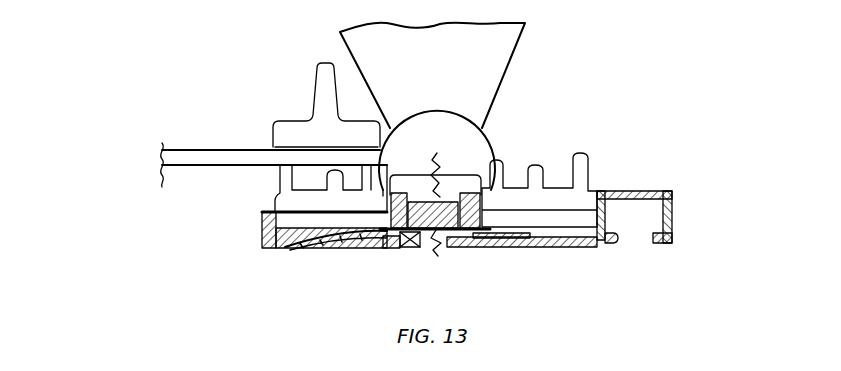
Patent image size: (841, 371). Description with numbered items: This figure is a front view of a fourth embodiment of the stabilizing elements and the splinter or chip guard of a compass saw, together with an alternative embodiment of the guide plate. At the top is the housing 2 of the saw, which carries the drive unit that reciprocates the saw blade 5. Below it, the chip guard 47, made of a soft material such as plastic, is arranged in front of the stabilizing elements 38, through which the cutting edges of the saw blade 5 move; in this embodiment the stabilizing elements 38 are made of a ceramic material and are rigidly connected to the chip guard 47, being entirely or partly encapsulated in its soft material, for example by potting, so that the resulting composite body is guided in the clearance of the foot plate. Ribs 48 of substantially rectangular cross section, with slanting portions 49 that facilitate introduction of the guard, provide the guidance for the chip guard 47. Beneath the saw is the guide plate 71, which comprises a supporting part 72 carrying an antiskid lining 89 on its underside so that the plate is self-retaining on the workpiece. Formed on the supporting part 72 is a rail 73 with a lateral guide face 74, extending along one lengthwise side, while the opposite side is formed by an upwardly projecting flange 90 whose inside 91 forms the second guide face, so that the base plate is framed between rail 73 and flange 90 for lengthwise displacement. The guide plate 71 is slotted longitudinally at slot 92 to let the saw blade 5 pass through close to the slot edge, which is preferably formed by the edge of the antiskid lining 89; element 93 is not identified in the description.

The housing 2 is at (498, 43).
The saw blade 5 is at (440, 176).
The chip guard 47 is at (462, 190).
The lateral guide face 74 is at (612, 192).
The rail 73 is at (679, 206).
The guide plate 71 is at (594, 252).
The supporting part 72 is at (538, 241).
The anti-skid lining 89 is at (490, 247).
The center piece 93 is at (441, 242).
The slot 92 is at (423, 246).
The stabilizing elements 38 is at (397, 250).
The flange 90 is at (273, 218).
The inside of flange 91 is at (283, 242).
The ribs 48 is at (345, 248).
The slanting portions 49 is at (338, 270).